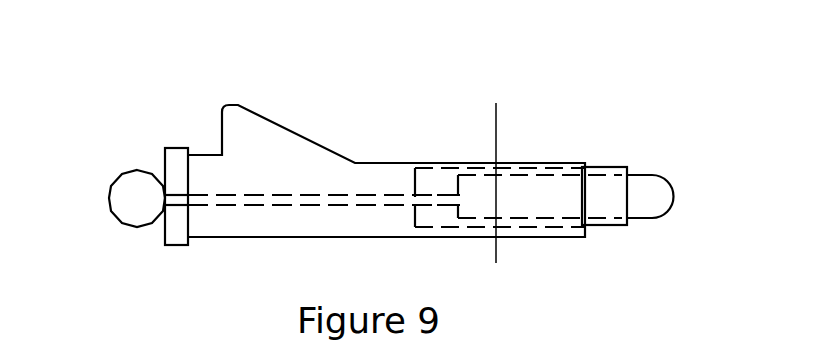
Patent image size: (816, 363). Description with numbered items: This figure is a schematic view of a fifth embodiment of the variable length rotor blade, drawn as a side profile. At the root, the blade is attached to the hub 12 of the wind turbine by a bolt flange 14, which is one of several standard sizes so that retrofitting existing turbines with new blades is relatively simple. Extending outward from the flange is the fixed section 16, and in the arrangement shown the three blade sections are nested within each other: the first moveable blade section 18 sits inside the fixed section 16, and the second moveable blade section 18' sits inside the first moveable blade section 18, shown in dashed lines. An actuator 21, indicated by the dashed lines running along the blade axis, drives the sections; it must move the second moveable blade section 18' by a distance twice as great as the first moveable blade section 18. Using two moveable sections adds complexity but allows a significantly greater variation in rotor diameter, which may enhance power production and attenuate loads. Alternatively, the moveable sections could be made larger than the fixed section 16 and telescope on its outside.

The hub 12 is at (118, 202).
The bolt flange 14 is at (175, 160).
The fixed blade section 16 is at (283, 158).
The first moveable blade section 18 is at (604, 168).
The second moveable blade section 18' is at (660, 164).
The actuator 21 is at (310, 200).